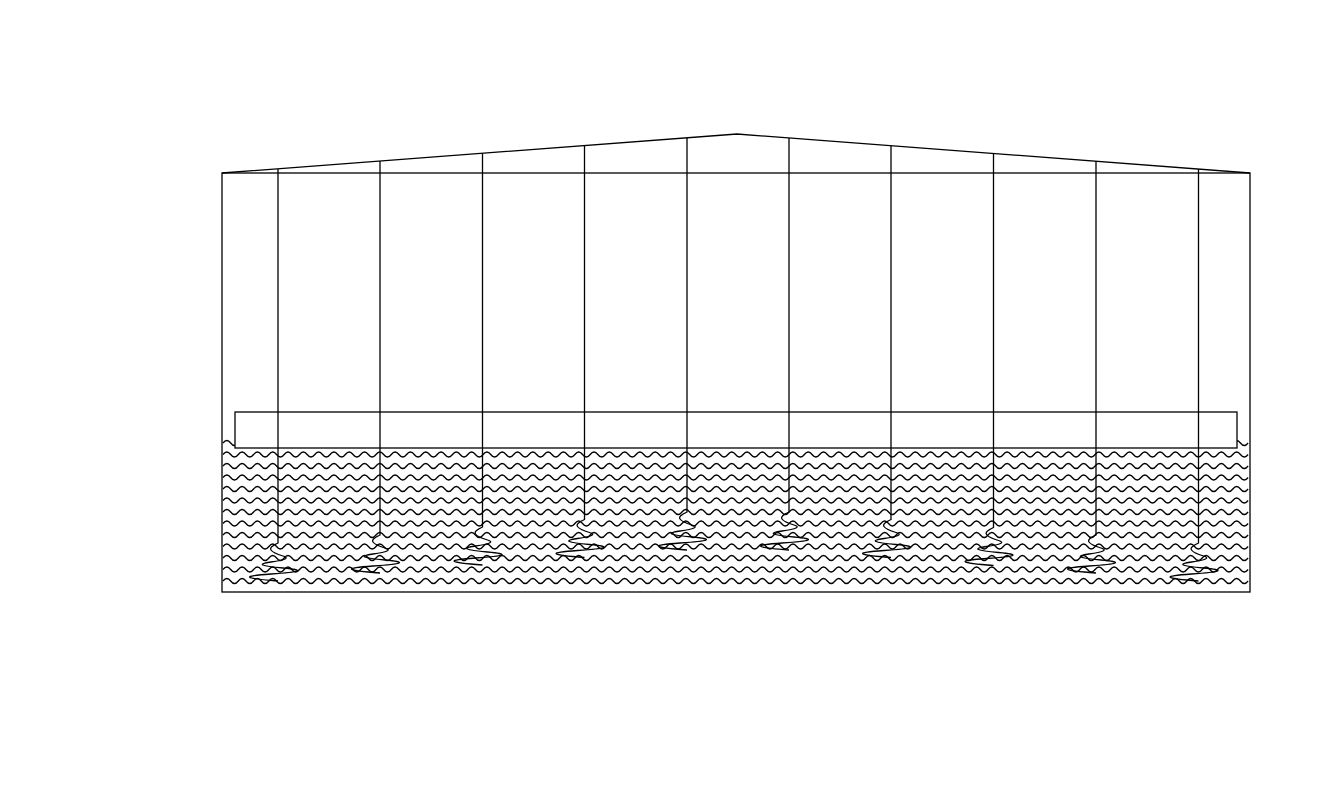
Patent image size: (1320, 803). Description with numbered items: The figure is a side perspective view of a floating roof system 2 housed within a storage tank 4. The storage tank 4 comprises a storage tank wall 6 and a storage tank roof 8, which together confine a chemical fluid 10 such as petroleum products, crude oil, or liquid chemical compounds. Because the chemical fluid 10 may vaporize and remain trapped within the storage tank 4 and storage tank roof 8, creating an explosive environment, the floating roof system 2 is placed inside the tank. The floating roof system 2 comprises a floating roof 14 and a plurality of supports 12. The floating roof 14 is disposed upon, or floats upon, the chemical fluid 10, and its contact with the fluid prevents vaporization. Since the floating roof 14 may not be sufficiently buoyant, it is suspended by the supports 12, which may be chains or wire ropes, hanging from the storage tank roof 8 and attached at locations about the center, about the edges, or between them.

The floating roof system 2 is at (148, 428).
The storage tank 4 is at (1176, 64).
The storage tank wall 6 is at (1250, 257).
The storage tank roof 8 is at (970, 152).
The chemical fluid 10 is at (206, 545).
The support 12 is at (275, 258).
The floating roof 14 is at (245, 418).